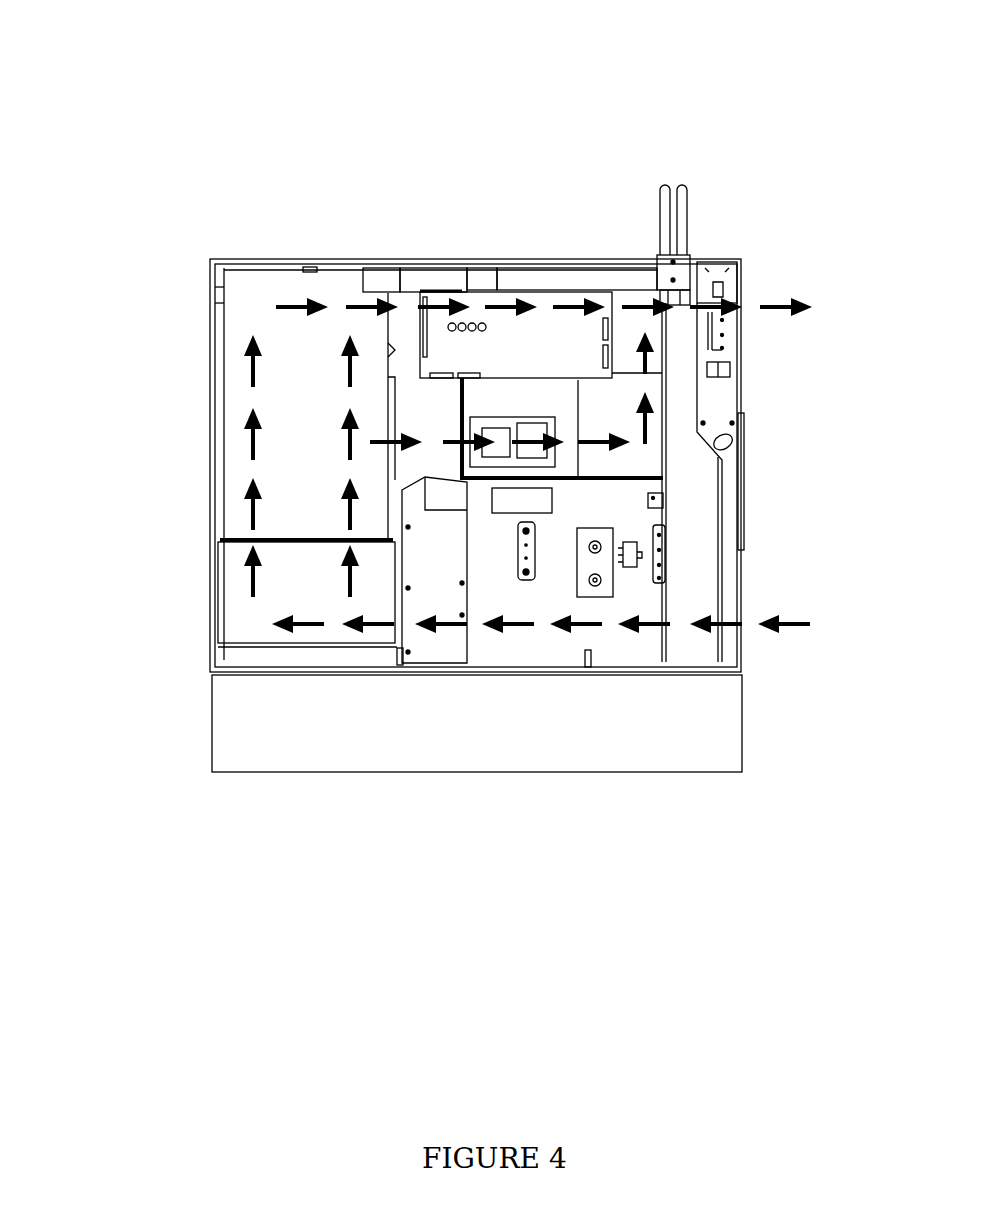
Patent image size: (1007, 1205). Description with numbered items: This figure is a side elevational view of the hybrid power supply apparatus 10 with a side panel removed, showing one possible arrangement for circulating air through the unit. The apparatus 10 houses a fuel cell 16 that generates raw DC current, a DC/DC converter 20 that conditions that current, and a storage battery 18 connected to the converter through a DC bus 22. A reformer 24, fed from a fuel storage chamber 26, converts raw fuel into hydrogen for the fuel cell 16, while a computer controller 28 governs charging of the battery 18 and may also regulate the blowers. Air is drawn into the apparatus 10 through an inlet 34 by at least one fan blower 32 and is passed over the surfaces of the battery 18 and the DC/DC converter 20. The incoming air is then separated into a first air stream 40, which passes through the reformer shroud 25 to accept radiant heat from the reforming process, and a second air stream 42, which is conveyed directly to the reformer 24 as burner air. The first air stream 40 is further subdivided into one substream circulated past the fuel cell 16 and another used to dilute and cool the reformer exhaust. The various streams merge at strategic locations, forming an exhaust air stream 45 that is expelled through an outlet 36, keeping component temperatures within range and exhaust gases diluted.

The hybrid power supply apparatus 10 is at (740, 220).
The fuel cell 16 is at (628, 400).
The storage battery 18 is at (517, 593).
The DC/DC converter 20 is at (432, 578).
The DC bus 22 is at (597, 563).
The reformer 24 is at (287, 603).
The reformer shroud 25 is at (298, 395).
The fuel storage chamber 26 is at (298, 720).
The computer controller 28 is at (513, 330).
The fan blower 32 is at (530, 502).
The inlet 34 is at (740, 622).
The outlet 36 is at (740, 306).
The first air stream 40 is at (340, 487).
The second air stream 42 is at (245, 419).
The exhaust air stream 45 is at (597, 300).